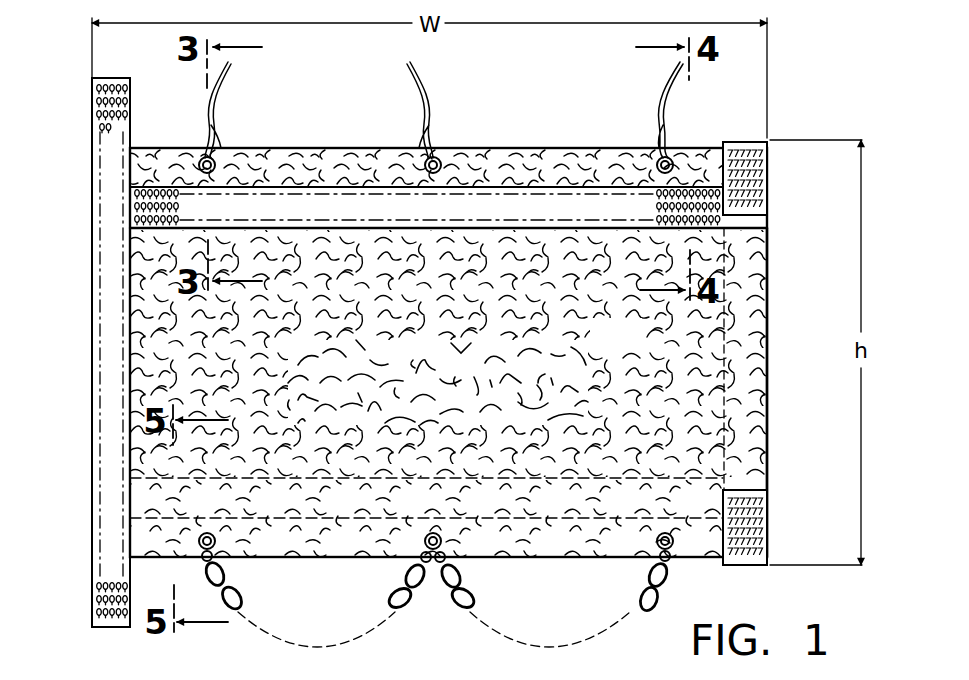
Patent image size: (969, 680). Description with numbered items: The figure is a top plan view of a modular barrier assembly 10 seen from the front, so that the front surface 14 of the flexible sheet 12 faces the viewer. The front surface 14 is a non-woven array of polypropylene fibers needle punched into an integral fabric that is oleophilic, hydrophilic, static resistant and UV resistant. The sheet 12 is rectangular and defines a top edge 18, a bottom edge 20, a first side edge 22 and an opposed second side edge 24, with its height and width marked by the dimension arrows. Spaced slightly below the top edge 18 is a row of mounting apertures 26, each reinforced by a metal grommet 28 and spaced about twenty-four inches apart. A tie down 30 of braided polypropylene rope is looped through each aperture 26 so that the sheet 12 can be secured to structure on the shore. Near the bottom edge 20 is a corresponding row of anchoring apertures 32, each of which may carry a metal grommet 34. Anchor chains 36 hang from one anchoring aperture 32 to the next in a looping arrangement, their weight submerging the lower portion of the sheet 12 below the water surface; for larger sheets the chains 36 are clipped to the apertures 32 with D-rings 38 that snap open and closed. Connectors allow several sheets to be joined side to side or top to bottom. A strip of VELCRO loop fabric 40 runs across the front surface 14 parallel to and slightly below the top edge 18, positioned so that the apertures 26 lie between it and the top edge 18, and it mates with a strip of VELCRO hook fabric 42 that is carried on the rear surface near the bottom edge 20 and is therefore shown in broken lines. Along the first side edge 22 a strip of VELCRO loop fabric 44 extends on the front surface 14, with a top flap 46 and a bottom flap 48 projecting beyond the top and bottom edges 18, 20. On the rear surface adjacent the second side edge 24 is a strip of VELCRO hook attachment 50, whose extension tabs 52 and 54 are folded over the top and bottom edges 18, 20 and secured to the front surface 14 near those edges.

The modular barrier assembly 10 is at (782, 102).
The flexible sheet 12 is at (580, 145).
The front surface 14 is at (604, 347).
The top edge 18 is at (492, 147).
The bottom edge 20 is at (319, 560).
The first side edge 22 is at (92, 355).
The second side edge 24 is at (767, 300).
The apertures 26 is at (200, 164).
The metal grommet 28 is at (215, 162).
The tie downs 30 is at (424, 80).
The anchoring apertures 32 is at (213, 537).
The metal grommet 34 is at (214, 554).
The anchor chains 36 is at (230, 611).
The D-rings 38 is at (425, 550).
The strip of VELCRO loop fabric 40 is at (391, 206).
The strip of VELCRO hook fabric 42 is at (135, 497).
The strip of VELCRO loop fabric 44 is at (118, 249).
The top flap 46 is at (92, 104).
The bottom flap 48 is at (92, 606).
The strip of VELCRO hook attachment 50 is at (752, 424).
The extension tab 52 is at (760, 172).
The extension tab 54 is at (756, 563).